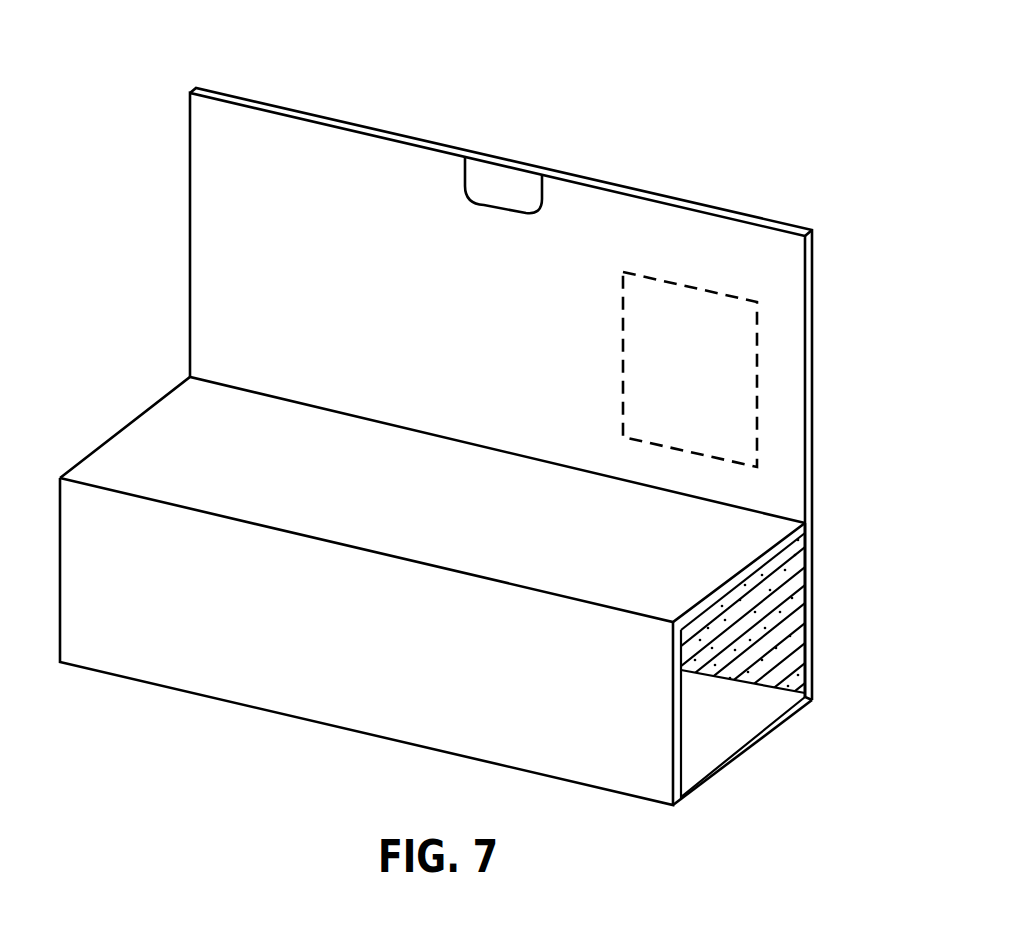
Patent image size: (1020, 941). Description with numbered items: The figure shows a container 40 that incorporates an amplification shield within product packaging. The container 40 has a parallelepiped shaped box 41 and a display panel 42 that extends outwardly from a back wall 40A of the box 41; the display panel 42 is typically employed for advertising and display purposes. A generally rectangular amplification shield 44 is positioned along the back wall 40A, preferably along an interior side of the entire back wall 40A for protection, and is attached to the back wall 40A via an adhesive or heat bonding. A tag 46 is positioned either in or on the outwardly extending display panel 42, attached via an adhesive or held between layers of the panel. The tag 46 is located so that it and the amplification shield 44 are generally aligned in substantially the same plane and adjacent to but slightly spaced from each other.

The container 40 is at (138, 260).
The back wall 40A is at (812, 568).
The box 41 is at (123, 429).
The display panel 42 is at (327, 160).
The amplification shield 44 is at (776, 633).
The tag 46 is at (723, 393).